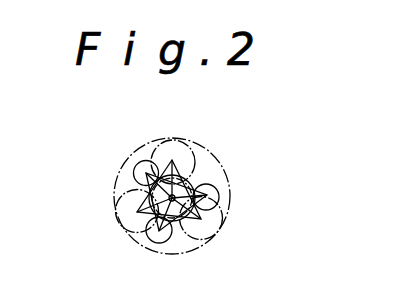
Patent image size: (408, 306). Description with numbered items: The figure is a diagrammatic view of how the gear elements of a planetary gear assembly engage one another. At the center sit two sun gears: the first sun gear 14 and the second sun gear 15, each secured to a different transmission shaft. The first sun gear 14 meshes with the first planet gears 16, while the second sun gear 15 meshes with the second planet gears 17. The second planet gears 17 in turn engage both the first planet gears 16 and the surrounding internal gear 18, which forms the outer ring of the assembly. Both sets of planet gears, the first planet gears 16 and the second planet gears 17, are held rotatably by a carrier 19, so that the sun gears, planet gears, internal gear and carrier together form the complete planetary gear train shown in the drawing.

The first sun gear 14 is at (210, 183).
The second sun gear 15 is at (173, 226).
The first planet gears 16 is at (140, 172).
The second planet gears 17 is at (190, 162).
The internal gear 18 is at (212, 154).
The carrier 19 is at (158, 158).